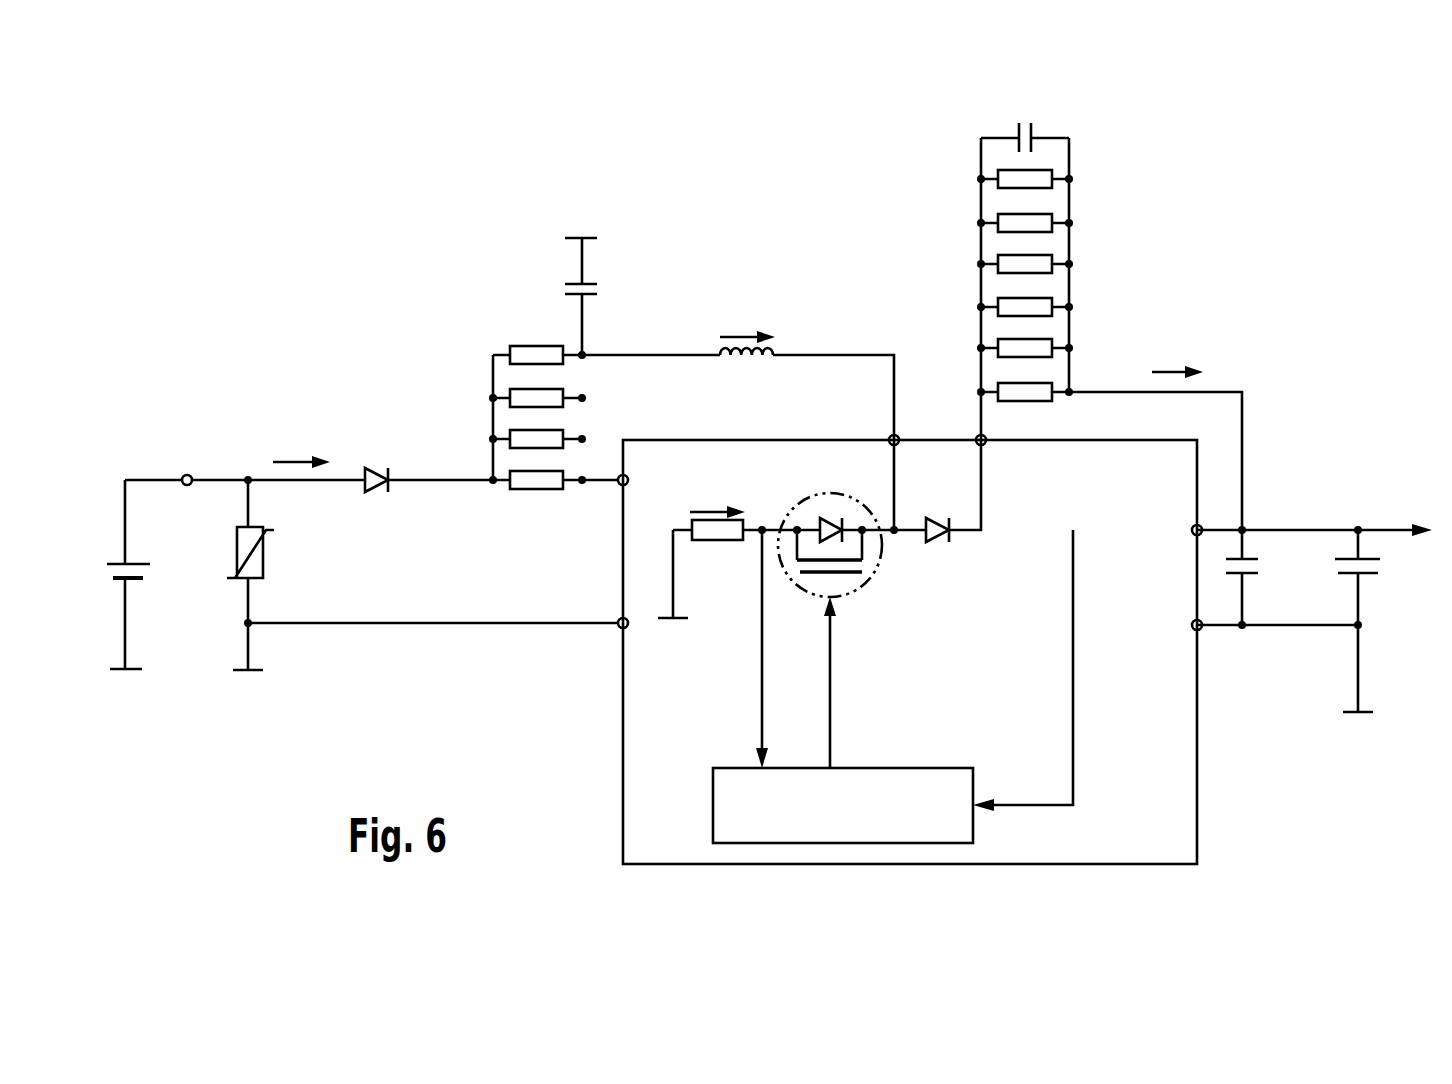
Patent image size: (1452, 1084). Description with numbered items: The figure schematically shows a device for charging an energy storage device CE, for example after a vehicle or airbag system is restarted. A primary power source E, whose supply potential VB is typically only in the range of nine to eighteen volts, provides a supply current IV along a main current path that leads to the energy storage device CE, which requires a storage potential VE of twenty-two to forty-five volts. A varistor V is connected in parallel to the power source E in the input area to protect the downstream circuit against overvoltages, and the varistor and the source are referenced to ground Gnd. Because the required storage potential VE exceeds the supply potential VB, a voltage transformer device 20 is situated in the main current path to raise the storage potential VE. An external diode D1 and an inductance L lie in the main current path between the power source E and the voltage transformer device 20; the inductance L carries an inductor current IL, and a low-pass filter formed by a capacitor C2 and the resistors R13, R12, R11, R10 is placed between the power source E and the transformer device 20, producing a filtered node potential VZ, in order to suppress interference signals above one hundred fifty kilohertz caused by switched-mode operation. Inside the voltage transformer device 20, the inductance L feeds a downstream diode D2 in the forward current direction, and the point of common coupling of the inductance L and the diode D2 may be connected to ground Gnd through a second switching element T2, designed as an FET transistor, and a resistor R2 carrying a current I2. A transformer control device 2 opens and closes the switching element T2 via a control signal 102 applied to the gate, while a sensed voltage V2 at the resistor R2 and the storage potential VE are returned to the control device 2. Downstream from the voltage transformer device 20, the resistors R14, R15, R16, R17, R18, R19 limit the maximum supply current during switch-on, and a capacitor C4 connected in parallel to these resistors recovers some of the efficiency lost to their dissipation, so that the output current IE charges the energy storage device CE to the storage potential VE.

The supply potential VB is at (185, 475).
The supply current IV is at (296, 462).
The power source E is at (150, 568).
The varistor V is at (263, 563).
The external diode D1 is at (377, 470).
The ground Gnd is at (125, 670).
The resistor R10 is at (535, 480).
The resistor R11 is at (535, 439).
The resistor R12 is at (535, 398).
The resistor R13 is at (535, 355).
The capacitor C2 is at (597, 290).
The intermediate voltage node VZ is at (605, 486).
The inductor current IL is at (742, 337).
The inductance L is at (747, 362).
The voltage transformer device 20 is at (1063, 865).
The current through resistor R2 I2 is at (705, 512).
The resistor R2 is at (718, 540).
The second switching element T2 is at (868, 572).
The diode D2 is at (935, 538).
The voltage signal V2 is at (765, 697).
The control signal 102 is at (832, 722).
The transformer control device 2 is at (853, 828).
The storage potential VE is at (1073, 735).
The energy storage device CE is at (1370, 568).
The output current IE is at (1166, 372).
The capacitor C4 is at (1026, 121).
The resistor R14 is at (1022, 179).
The resistor R15 is at (1022, 223).
The resistor R16 is at (1022, 264).
The resistor R17 is at (1022, 307).
The resistor R18 is at (1022, 348).
The resistor R19 is at (1022, 392).